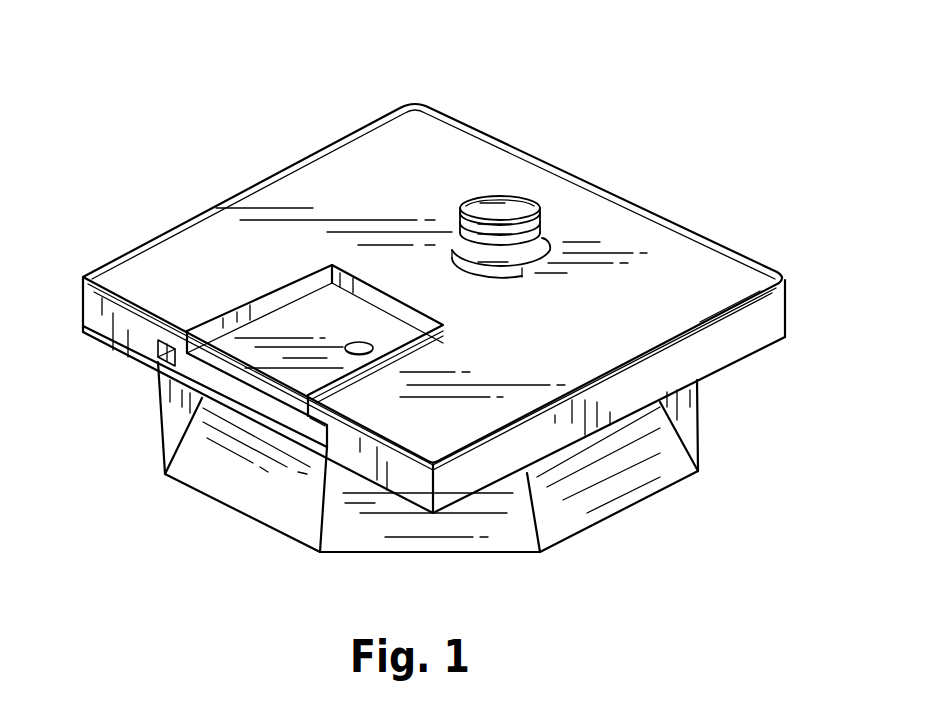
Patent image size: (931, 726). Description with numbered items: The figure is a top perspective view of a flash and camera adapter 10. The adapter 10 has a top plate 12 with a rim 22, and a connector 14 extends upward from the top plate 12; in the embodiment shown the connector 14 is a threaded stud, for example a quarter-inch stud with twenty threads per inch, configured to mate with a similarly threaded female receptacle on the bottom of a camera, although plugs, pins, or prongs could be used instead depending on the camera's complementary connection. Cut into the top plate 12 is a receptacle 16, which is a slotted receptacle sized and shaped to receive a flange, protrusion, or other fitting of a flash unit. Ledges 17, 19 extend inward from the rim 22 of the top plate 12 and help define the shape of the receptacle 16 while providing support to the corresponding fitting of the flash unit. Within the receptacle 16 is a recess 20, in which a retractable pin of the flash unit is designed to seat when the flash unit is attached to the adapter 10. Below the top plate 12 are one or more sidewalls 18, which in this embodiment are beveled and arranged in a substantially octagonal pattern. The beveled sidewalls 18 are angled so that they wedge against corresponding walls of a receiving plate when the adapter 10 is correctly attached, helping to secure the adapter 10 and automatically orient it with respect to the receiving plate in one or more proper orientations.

The adapter 10 is at (620, 124).
The top plate 12 is at (343, 170).
The connector 14 is at (508, 197).
The receptacle 16 is at (299, 296).
The ledge 17 is at (173, 353).
The sidewall 18 is at (172, 423).
The ledge 19 is at (311, 412).
The recess 20 is at (362, 342).
The rim 22 is at (715, 347).